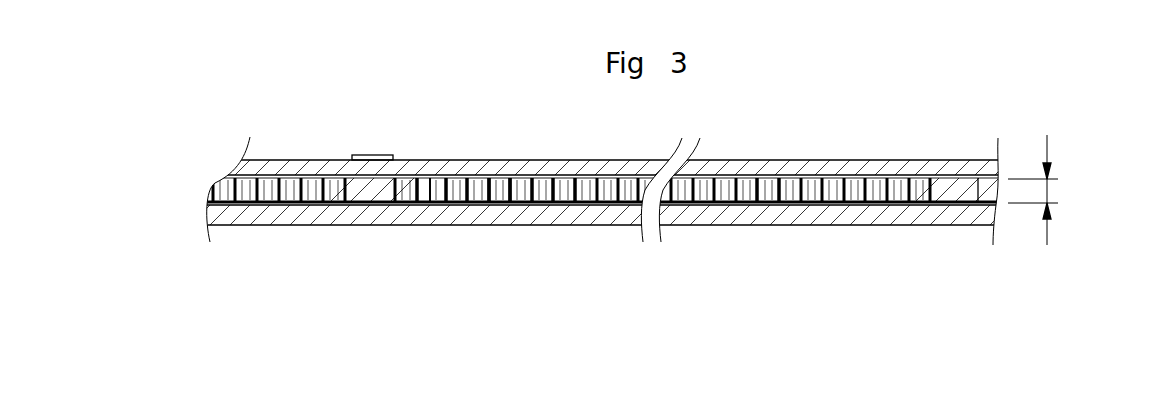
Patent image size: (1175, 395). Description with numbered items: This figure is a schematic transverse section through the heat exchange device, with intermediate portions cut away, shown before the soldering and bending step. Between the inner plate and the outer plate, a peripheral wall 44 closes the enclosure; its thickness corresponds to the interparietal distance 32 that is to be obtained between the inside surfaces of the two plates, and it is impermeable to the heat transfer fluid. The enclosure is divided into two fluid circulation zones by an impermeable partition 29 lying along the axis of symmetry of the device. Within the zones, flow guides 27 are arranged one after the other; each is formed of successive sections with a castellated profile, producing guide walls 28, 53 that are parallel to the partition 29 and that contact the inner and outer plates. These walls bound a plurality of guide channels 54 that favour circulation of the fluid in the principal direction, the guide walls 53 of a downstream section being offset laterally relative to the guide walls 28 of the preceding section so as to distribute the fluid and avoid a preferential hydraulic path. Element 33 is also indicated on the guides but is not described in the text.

The flow guide 27 is at (443, 178).
The guide wall 28 is at (503, 178).
The impermeable partition 29 is at (372, 193).
The interparietal distance 32 is at (1047, 190).
The cells 33 is at (569, 180).
The peripheral wall 44 is at (956, 193).
The guide wall 53 is at (501, 186).
The guide channel 54 is at (775, 190).